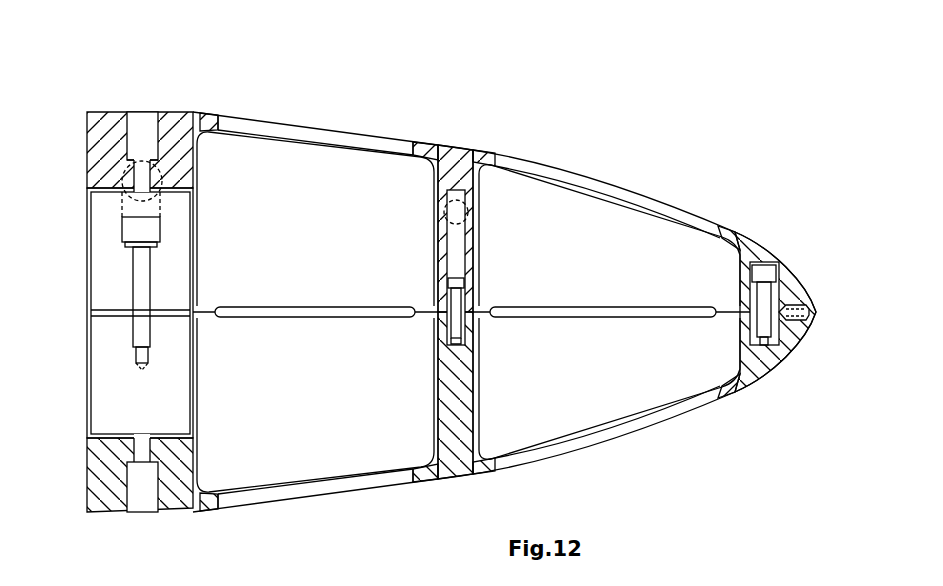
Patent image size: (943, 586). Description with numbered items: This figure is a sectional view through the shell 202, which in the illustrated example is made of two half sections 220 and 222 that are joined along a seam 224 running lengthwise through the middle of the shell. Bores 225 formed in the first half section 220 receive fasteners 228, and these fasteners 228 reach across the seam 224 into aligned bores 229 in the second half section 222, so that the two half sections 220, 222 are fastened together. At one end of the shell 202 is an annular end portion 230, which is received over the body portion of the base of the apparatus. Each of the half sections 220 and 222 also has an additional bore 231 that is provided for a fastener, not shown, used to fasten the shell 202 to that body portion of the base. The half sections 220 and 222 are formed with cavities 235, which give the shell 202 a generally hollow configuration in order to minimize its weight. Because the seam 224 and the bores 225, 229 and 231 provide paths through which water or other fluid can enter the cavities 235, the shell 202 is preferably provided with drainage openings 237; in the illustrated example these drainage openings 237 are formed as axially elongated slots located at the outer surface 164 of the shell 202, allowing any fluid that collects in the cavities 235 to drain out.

The shell 202 is at (99, 96).
The additional bore 231 is at (143, 120).
The drainage openings 237 is at (312, 124).
The first half section 220 is at (468, 152).
The outer surface 164 is at (722, 232).
The fasteners 228 is at (132, 228).
The bores 225 is at (130, 265).
The seam 224 is at (486, 306).
The cavities 235 is at (273, 232).
The aligned bores 229 is at (133, 335).
The annular end portion 230 is at (112, 438).
The second half section 222 is at (459, 466).